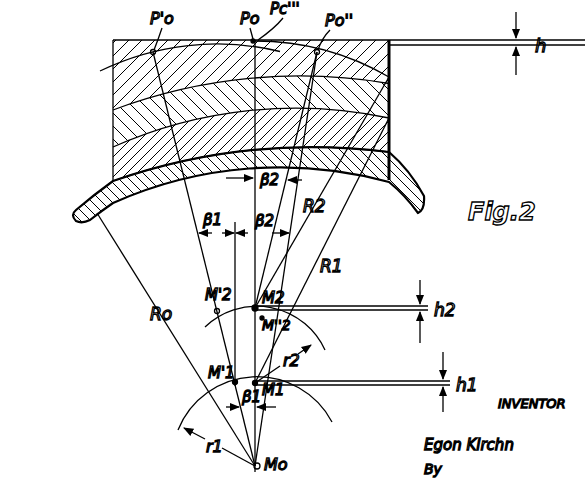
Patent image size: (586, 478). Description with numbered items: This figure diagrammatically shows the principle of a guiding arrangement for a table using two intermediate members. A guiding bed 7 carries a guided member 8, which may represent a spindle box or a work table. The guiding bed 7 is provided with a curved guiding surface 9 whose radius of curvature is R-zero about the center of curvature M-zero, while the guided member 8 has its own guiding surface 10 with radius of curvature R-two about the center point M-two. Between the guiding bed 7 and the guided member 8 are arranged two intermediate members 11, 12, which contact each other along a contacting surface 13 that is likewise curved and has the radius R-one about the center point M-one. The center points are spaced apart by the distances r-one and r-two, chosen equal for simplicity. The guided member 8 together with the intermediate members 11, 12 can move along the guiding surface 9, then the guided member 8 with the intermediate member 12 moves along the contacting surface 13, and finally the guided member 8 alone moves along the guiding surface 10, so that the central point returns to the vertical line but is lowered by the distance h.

The guiding bed 7 is at (97, 195).
The guided member 8 is at (125, 52).
The guiding surface 9 is at (112, 182).
The guiding surface 10 is at (125, 114).
The intermediate member 11 is at (391, 146).
The intermediate member 12 is at (391, 118).
The contacting surface 13 is at (391, 79).